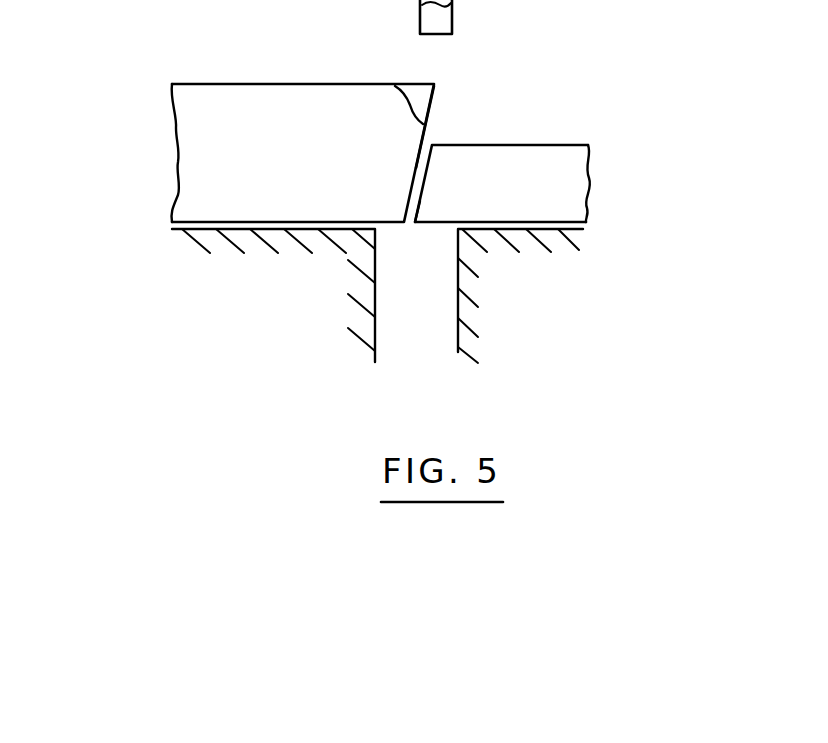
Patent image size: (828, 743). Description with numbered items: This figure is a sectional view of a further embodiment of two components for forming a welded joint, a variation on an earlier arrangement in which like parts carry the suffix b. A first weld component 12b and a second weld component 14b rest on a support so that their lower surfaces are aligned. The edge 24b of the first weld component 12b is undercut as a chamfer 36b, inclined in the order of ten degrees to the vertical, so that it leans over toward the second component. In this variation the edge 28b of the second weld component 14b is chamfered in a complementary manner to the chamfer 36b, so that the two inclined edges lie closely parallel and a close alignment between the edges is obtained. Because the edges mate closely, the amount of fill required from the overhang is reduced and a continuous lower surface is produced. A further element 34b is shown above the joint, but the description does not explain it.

The weld component 12b is at (192, 170).
The weld component 14b is at (570, 182).
The edge 24b is at (434, 92).
The edge 28b is at (420, 201).
The cutting tool 34b is at (420, 20).
The chamfer 36b is at (395, 86).